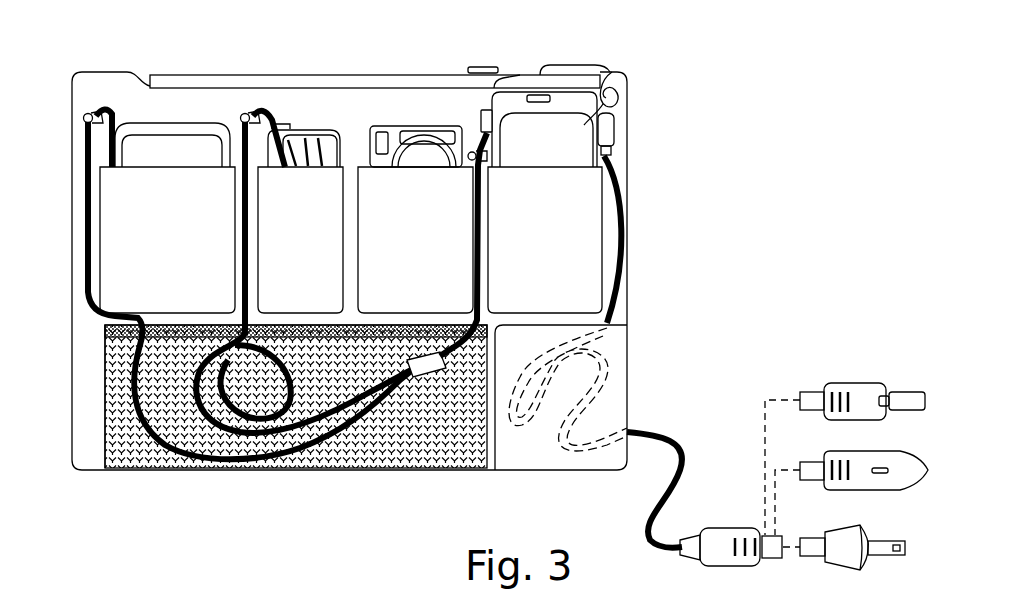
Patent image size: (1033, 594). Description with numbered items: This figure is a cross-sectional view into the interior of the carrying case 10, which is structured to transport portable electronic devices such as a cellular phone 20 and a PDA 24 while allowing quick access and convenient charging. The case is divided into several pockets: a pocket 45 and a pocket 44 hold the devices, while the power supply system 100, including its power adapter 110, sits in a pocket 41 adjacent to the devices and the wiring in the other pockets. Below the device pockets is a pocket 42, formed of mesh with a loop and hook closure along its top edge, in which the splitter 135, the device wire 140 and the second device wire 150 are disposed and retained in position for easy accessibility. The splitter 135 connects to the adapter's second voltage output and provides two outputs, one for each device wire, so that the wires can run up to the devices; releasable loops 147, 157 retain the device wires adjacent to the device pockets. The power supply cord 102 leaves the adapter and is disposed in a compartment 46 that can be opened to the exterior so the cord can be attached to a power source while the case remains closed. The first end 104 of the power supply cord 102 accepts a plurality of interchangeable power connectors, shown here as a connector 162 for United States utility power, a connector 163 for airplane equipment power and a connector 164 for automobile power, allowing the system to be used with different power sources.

The carrying case 10 is at (400, 57).
The cellular phone 20 is at (298, 128).
The PDA 24 is at (153, 125).
The pocket 41 is at (554, 242).
The pocket 42 is at (385, 425).
The pocket 44 is at (312, 242).
The pocket 45 is at (176, 244).
The compartment 46 is at (529, 462).
The power supply system 100 is at (603, 128).
The power supply cord 102 is at (627, 223).
The first end 104 is at (720, 553).
The power adapter 110 is at (540, 93).
The splitter 135 is at (438, 378).
The device wire 140 is at (270, 345).
The releasable loop 147 is at (245, 112).
The second device wire 150 is at (108, 383).
The releasable loop 157 is at (88, 113).
The power connector 162 is at (863, 528).
The power connector 163 is at (847, 383).
The power connector 164 is at (847, 452).